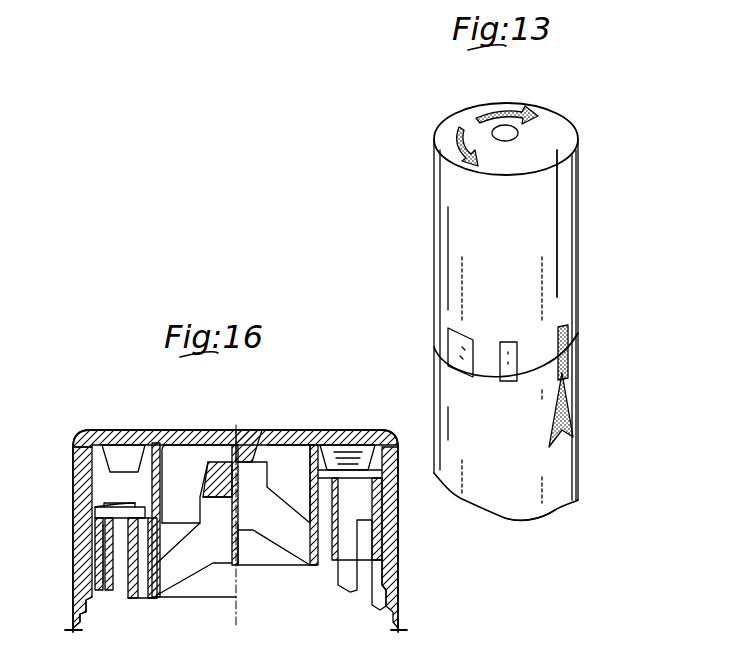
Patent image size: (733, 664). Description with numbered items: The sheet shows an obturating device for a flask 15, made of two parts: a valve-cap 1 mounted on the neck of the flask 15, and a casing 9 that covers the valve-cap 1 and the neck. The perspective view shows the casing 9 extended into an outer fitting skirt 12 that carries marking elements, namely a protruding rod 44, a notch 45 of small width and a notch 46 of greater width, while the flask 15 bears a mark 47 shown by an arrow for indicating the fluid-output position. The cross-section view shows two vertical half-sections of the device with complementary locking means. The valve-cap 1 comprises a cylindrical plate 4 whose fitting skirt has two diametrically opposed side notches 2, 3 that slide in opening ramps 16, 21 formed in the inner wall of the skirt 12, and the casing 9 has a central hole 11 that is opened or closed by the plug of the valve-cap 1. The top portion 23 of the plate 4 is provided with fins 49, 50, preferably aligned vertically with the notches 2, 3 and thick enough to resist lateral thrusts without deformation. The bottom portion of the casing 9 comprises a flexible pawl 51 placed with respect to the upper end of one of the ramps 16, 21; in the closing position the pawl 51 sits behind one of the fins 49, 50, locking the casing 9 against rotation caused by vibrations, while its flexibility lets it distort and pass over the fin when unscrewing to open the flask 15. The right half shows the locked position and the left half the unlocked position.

In FIG. 13, the casing 9 is at (588, 221).
In FIG. 16, the casing 9 is at (296, 430).
In FIG. 13, the outer fitting skirt 12 is at (565, 282).
In FIG. 13, the protruding rod 44 is at (566, 342).
In FIG. 13, the notch of small width 45 is at (507, 342).
In FIG. 13, the notch of greater width 46 is at (458, 352).
In FIG. 13, the mark 47 is at (566, 418).
In FIG. 13, the flask 15 is at (548, 508).
In FIG. 16, the flexible pawl 51 is at (128, 470).
In FIG. 16, the top portion of the plate 23 is at (180, 430).
In FIG. 16, the central hole 11 is at (218, 430).
In FIG. 16, the fin 50 is at (362, 430).
In FIG. 16, the side notch 3 is at (385, 535).
In FIG. 16, the opening ramp 21 is at (386, 554).
In FIG. 16, the cylindrical plate 4 is at (92, 520).
In FIG. 16, the valve-cap 1 is at (103, 546).
In FIG. 16, the fin 49 is at (108, 505).
In FIG. 16, the opening ramp 16 is at (94, 560).
In FIG. 16, the side notch 2 is at (92, 588).